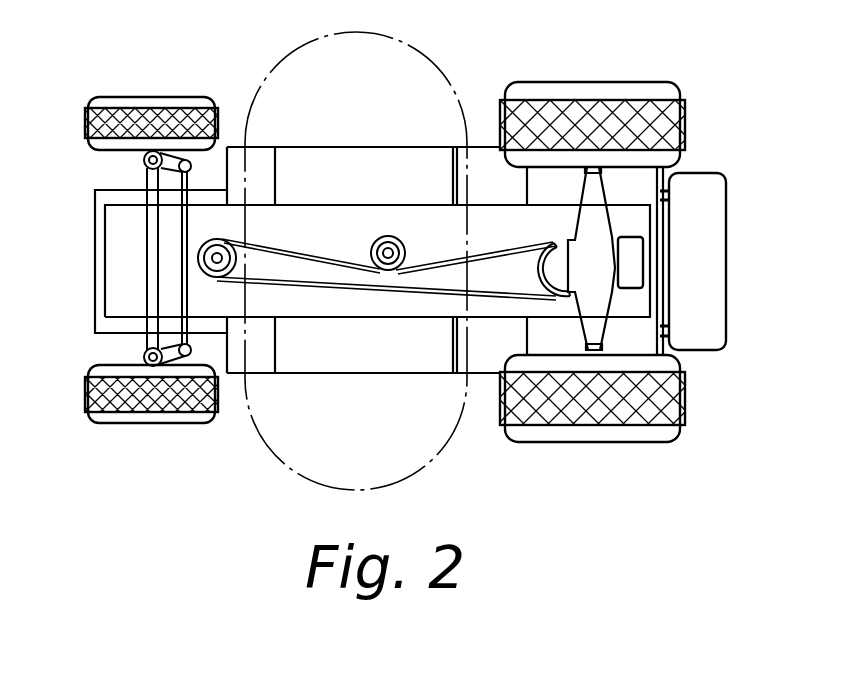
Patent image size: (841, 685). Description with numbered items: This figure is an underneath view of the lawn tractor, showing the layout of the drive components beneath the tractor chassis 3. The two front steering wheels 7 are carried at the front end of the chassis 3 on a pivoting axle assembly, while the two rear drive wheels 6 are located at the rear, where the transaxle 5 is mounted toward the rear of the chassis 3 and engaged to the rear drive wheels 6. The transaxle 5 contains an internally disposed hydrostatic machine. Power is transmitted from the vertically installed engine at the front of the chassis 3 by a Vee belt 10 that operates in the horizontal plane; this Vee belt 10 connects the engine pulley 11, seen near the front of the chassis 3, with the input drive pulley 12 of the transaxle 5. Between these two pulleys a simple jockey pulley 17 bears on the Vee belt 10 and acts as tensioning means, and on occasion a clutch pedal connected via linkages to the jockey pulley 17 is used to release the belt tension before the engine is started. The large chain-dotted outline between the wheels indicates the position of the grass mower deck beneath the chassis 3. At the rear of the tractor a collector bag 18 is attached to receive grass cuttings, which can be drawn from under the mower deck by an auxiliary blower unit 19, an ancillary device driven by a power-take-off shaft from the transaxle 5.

The tractor chassis 3 is at (207, 222).
The transaxle 5 is at (585, 266).
The rear drive wheels 6 is at (530, 100).
The front steering wheels 7 is at (147, 108).
The Vee belt 10 is at (315, 288).
The engine pulley 11 is at (237, 246).
The input drive pulley 12 is at (540, 252).
The jockey pulley 17 is at (385, 238).
The collector bag 18 is at (703, 325).
The auxiliary blower unit 19 is at (632, 258).